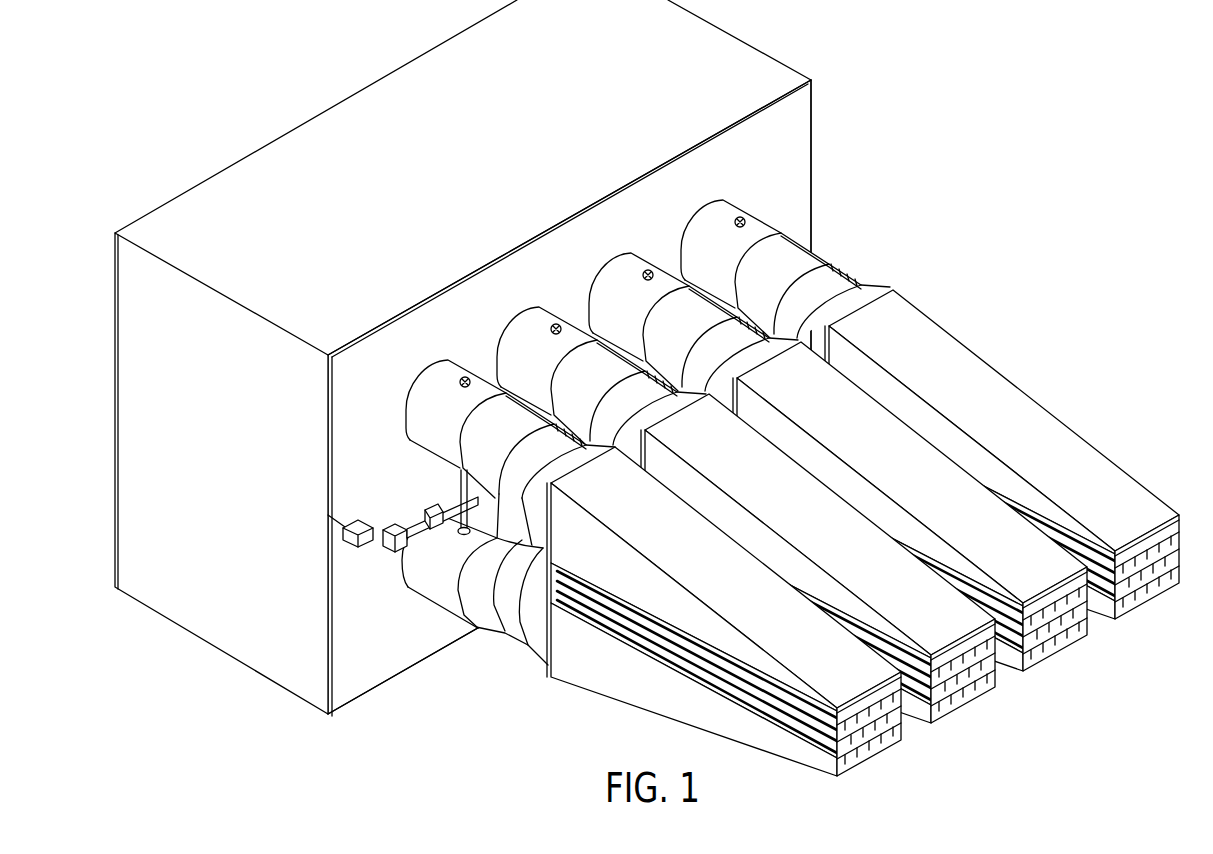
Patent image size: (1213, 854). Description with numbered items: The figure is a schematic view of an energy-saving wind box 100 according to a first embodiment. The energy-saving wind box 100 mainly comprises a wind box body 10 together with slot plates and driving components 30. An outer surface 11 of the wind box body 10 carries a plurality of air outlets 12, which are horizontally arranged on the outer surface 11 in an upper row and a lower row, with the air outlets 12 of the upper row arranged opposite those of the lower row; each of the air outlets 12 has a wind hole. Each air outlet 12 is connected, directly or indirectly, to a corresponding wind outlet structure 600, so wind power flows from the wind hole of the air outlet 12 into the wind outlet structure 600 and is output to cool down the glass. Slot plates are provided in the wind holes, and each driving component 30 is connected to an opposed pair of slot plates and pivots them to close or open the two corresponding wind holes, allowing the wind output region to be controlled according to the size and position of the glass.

The energy-saving wind box 100 is at (627, 388).
The wind box body 10 is at (343, 108).
The outer surface 11 is at (803, 135).
The air outlet 12 is at (765, 228).
The driving component 30 is at (340, 525).
The wind outlet structure 600 is at (1027, 378).